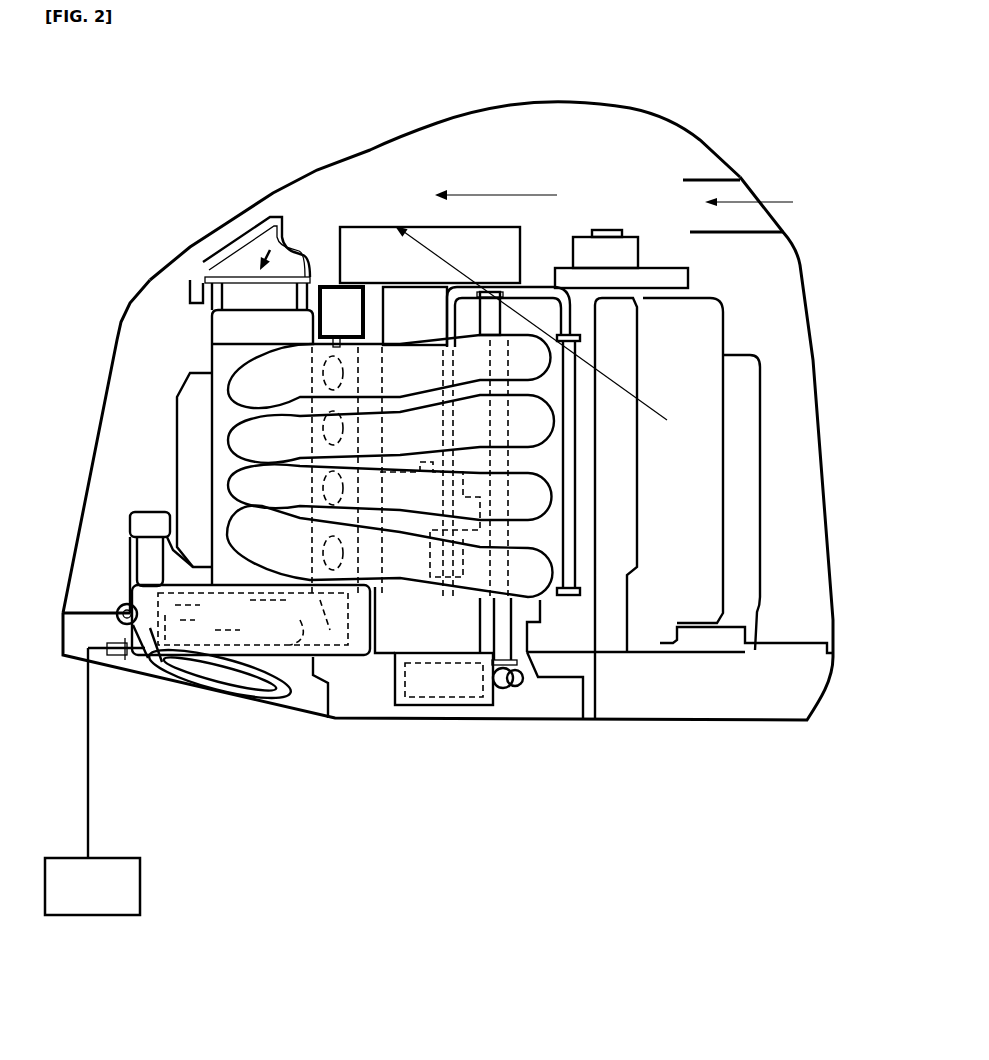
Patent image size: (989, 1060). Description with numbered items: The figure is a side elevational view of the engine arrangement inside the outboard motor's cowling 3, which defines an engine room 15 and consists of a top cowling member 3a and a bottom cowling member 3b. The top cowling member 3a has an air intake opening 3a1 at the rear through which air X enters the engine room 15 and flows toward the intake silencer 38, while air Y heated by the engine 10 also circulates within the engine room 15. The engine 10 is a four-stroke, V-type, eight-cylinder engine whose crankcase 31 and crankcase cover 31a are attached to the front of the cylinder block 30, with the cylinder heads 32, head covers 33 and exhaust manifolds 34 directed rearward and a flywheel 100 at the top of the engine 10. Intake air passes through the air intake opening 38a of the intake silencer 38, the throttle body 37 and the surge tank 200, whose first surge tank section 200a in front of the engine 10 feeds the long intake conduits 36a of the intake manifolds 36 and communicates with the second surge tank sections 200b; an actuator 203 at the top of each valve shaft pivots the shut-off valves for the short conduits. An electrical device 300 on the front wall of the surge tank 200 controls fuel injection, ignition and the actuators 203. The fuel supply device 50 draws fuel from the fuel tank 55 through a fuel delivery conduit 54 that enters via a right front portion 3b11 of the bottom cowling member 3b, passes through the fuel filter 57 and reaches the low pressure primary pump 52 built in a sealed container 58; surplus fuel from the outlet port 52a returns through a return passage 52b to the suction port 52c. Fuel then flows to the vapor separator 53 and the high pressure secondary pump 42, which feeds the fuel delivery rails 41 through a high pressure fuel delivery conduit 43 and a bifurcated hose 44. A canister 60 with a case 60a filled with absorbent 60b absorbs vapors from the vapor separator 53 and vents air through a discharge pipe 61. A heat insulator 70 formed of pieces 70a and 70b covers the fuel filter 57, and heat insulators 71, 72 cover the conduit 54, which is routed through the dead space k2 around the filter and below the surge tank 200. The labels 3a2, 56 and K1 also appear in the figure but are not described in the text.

The cowling 3 is at (813, 303).
The top cowling member 3a is at (824, 414).
The air intake opening 3a1 is at (745, 195).
The lower wall portion 3a2 is at (103, 556).
The bottom cowling member 3b is at (775, 694).
The right front portion of the bottom cowling member 3b11 is at (78, 652).
The engine 10 is at (776, 518).
The engine room 15 is at (370, 180).
The cylinder block 30 is at (530, 295).
The crankcase 31 is at (427, 293).
The crankcase cover 31a is at (366, 247).
The cylinder heads 32 is at (605, 615).
The head cover 33 is at (695, 500).
The exhaust manifolds 34 is at (740, 404).
The intake manifolds 36 is at (397, 341).
The long intake conduits 36a is at (263, 345).
The throttle body 37 is at (210, 320).
The intake silencer 38 is at (240, 258).
The air intake opening 38a is at (287, 235).
The fuel delivery rails 41 is at (572, 449).
The high pressure secondary pump 42 is at (430, 580).
The high pressure fuel delivery conduit 43 is at (470, 289).
The right-left bifurcated hose 44 is at (562, 297).
The fuel supply device 50 is at (116, 525).
The low pressure primary pump 52 is at (342, 580).
The outlet port 52a is at (340, 578).
The return passage 52b is at (228, 557).
The suction port 52c is at (262, 470).
The vapor separator 53 is at (434, 470).
The fuel delivery conduit 54 is at (183, 685).
The fuel tank 55 is at (140, 879).
The fuel passage 56 is at (360, 440).
The fuel filter 57 is at (150, 568).
The sealed container 58 is at (292, 574).
The canister 60 is at (466, 682).
The case 60a is at (401, 707).
The absorbent 60b is at (451, 698).
The discharge pipe 61 is at (497, 537).
The heat insulator 70 is at (142, 503).
The piece of the heat insulator 70a is at (178, 508).
The piece of the heat insulator 70b is at (147, 548).
The heat insulator 71 is at (197, 690).
The heat insulator 72 is at (175, 549).
The flywheel 100 is at (432, 238).
The surge tank 200 is at (188, 368).
The first surge tank section 200a is at (207, 360).
The second surge tank section 200b is at (402, 300).
The actuator 203 is at (333, 310).
The electrical device 300 is at (175, 420).
The air X is at (512, 190).
The air Y is at (665, 408).
The engine mount region K1 is at (557, 700).
The dead space K2 k2 is at (308, 690).